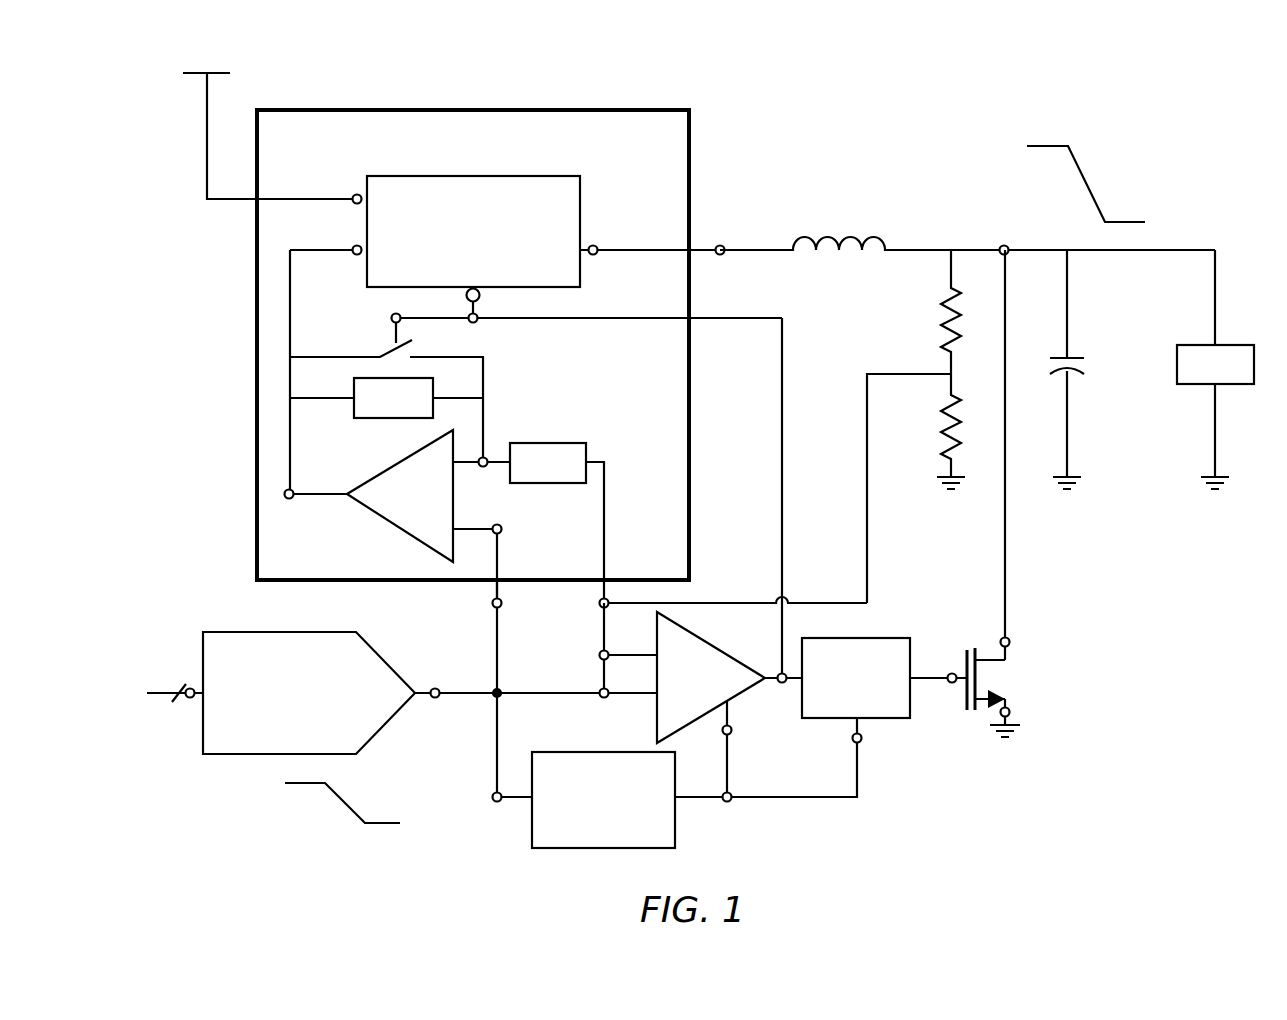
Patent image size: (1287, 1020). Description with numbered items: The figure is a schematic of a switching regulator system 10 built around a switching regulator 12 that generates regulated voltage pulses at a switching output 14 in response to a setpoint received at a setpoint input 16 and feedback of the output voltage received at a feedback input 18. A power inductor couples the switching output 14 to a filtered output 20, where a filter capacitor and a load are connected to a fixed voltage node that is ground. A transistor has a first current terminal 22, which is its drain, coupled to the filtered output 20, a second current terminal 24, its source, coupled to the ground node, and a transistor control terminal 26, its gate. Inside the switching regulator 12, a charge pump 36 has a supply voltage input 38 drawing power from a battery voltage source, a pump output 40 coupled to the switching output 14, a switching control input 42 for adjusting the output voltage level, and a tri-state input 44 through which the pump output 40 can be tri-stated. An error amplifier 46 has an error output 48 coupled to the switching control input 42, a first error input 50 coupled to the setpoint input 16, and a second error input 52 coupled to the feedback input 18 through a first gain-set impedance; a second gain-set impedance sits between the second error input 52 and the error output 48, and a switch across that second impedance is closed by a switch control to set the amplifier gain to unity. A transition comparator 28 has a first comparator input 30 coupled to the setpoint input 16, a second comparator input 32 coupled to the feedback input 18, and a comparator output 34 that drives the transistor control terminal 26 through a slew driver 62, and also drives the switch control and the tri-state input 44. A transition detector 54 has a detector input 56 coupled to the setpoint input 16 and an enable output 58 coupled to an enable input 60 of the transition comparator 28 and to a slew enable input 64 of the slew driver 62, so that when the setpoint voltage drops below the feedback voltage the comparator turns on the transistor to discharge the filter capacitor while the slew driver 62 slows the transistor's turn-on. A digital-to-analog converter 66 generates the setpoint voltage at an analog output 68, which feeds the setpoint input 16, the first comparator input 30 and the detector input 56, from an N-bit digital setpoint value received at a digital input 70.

The switching regulator system 10 is at (746, 66).
The switching regulator 12 is at (677, 144).
The switching output 14 is at (722, 255).
The setpoint input 16 is at (501, 606).
The feedback input 18 is at (600, 607).
The filtered output 20 is at (1000, 246).
The first current terminal 22 is at (1009, 640).
The second current terminal 24 is at (1010, 714).
The transistor control terminal 26 is at (948, 674).
The transition comparator 28 is at (715, 645).
The first comparator input 30 is at (604, 698).
The second comparator input 32 is at (601, 659).
The comparator output 34 is at (780, 683).
The charge pump 36 is at (572, 209).
The supply voltage input 38 is at (352, 196).
The pump output 40 is at (598, 248).
The switching control input 42 is at (352, 247).
The tri-state input 44 is at (477, 322).
The error amplifier 46 is at (395, 462).
The error output 48 is at (293, 498).
The first error input 50 is at (501, 526).
The second error input 52 is at (486, 457).
The transition detector 54 is at (614, 834).
The detector input 56 is at (494, 793).
The enable output 58 is at (724, 801).
The enable input 60 is at (731, 733).
The slew driver 62 is at (867, 712).
The slew enable input 64 is at (861, 742).
The digital-to-analog converter 66 is at (384, 704).
The analog output 68 is at (432, 697).
The digital input 70 is at (186, 697).